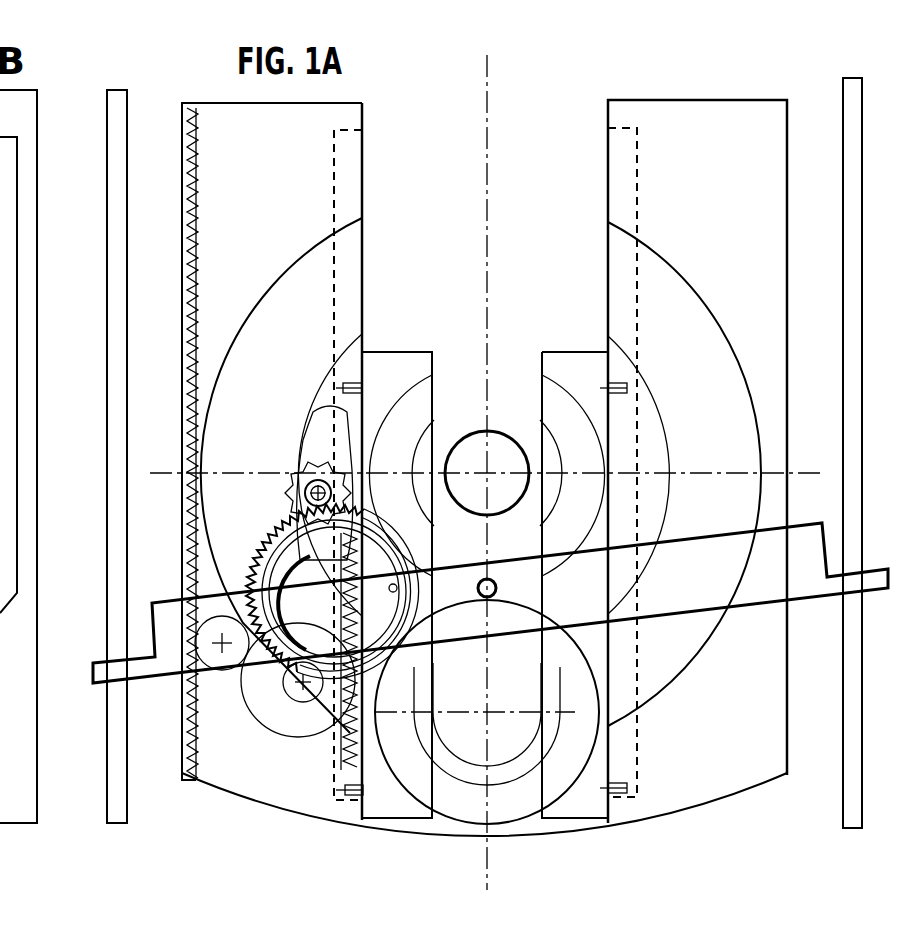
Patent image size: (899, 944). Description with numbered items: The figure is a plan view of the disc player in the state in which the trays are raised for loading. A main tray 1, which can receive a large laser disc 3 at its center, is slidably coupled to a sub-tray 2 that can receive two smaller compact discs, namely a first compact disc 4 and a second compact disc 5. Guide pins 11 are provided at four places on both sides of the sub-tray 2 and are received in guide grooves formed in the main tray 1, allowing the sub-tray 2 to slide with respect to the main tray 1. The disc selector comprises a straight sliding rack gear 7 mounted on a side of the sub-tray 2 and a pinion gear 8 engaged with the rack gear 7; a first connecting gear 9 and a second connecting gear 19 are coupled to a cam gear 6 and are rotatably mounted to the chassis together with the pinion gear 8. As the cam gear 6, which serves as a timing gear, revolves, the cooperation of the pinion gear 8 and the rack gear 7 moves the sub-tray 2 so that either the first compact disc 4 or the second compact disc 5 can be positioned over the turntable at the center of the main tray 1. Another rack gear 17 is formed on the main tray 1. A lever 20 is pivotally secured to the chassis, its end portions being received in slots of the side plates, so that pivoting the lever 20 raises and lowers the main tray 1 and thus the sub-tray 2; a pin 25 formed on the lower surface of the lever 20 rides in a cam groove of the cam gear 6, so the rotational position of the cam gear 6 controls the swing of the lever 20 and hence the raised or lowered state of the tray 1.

The main tray 1 is at (745, 780).
The sub-tray 2 is at (565, 808).
The laser disc 3 is at (680, 275).
The first compact disc 4 is at (545, 395).
The second compact disc 5 is at (428, 790).
The cam gear 6 is at (275, 548).
The rack gear 7 is at (320, 410).
The pinion gear 8 is at (305, 440).
The first connecting gear 9 is at (308, 738).
The guide pins 11 is at (345, 388).
The rack gear 17 is at (205, 780).
The second connecting gear 19 is at (220, 672).
The lever 20 is at (98, 662).
The pin 25 is at (405, 568).